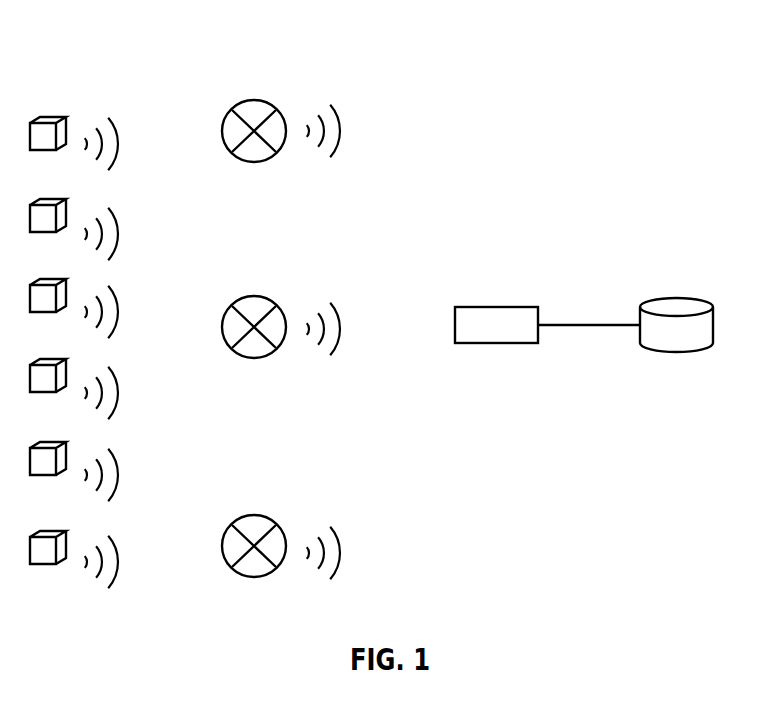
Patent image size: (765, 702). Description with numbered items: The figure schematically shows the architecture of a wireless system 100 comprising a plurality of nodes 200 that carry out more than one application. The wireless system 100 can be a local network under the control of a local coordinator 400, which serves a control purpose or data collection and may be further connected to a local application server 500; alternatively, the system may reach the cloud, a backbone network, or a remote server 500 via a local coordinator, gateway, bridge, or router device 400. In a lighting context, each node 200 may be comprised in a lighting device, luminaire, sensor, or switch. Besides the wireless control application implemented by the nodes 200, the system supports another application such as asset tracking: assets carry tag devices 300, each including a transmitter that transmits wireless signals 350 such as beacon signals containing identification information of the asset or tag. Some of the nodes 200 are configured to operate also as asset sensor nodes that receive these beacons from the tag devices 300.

The wireless system 100 is at (706, 44).
The node 200 is at (258, 95).
The tag device 300 is at (54, 110).
The wireless signals 350 is at (125, 458).
The local coordinator 400 is at (480, 353).
The local application server 500 is at (665, 358).